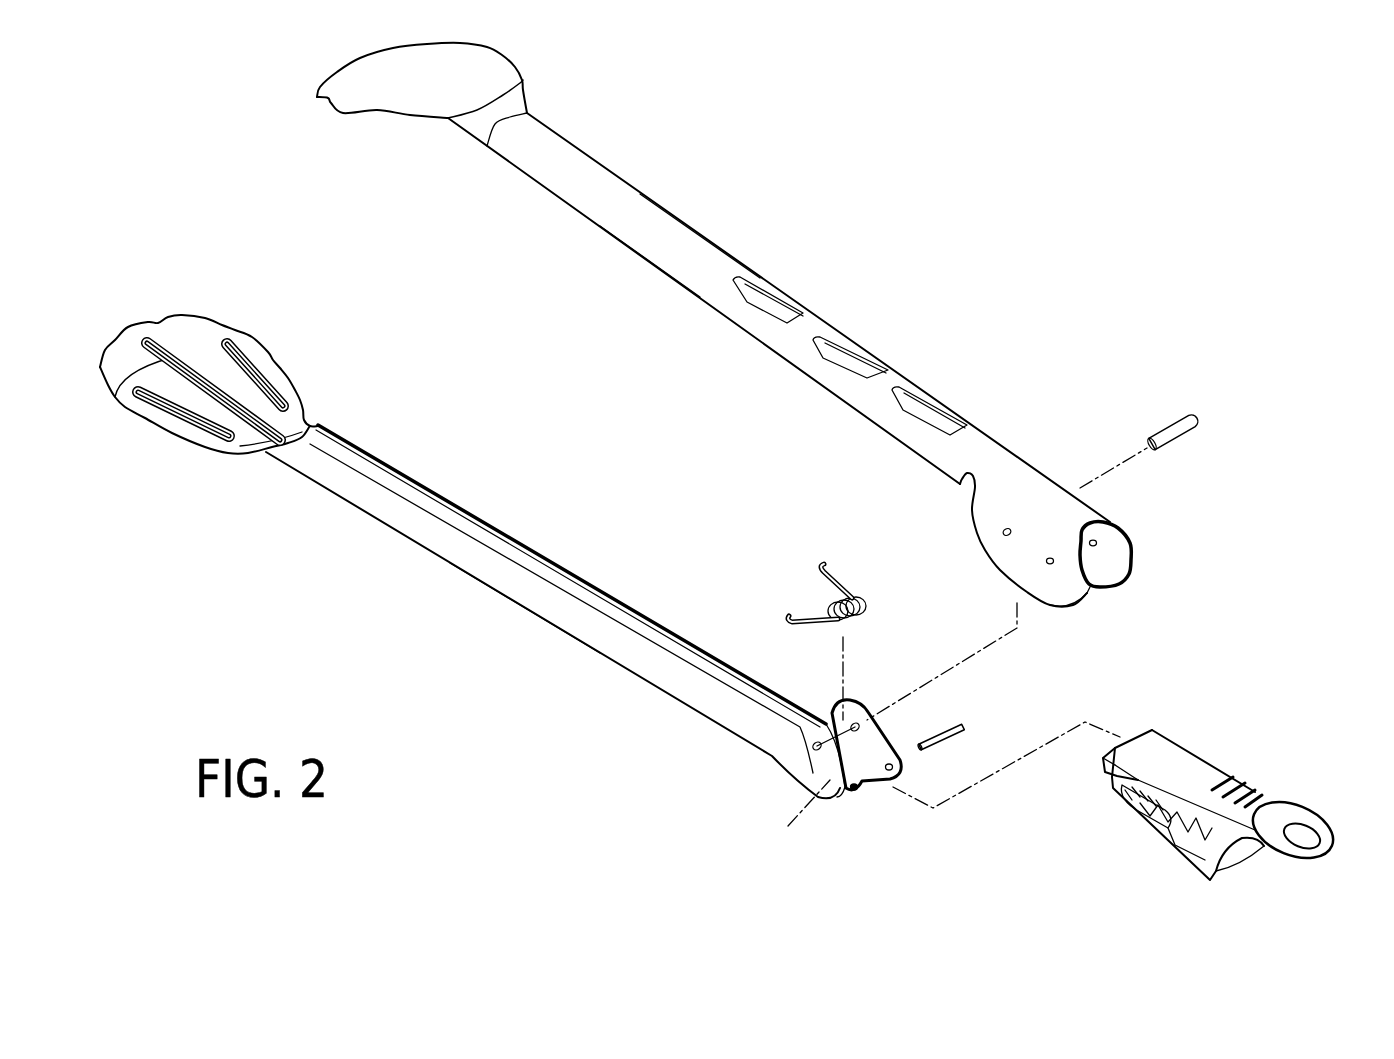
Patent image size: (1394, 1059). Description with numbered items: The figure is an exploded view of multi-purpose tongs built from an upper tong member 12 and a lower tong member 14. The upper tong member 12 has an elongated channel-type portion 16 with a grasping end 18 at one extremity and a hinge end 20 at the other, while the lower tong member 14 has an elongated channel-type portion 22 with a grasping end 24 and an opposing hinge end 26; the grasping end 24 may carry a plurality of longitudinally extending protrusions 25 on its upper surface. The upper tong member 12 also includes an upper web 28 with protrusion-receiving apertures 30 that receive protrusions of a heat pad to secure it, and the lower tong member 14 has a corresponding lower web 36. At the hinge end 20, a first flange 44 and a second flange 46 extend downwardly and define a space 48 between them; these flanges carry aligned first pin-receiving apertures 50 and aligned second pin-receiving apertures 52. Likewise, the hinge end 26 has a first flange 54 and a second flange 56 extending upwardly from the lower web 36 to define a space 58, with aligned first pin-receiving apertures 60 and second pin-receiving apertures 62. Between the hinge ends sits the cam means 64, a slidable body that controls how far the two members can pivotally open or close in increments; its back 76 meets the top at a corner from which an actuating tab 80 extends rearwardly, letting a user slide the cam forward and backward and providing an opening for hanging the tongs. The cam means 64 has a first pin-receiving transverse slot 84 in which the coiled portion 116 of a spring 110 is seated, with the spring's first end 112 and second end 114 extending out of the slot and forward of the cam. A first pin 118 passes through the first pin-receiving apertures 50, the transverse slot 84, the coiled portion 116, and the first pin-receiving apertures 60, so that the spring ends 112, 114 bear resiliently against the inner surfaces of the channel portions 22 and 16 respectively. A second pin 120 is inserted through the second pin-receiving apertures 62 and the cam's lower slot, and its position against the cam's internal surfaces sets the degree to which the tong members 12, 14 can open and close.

The upper tong member 12 is at (662, 196).
The lower tong member 14 is at (388, 530).
The elongated channel-type portion 16 is at (640, 262).
The grasping end 18 is at (500, 65).
The hinge end 20 is at (1140, 540).
The elongated channel-type portion 22 is at (587, 583).
The grasping end 24 is at (205, 355).
The longitudinally extending protrusions 25 is at (167, 410).
The hinge end 26 is at (800, 787).
The upper web 28 is at (712, 256).
The protrusion-receiving apertures 30 is at (790, 306).
The lower web 36 is at (590, 650).
The first flange 44 is at (1133, 568).
The second flange 46 is at (1075, 597).
The space 48 is at (1102, 594).
The first pin-receiving apertures 50 is at (1000, 530).
The second pin-receiving apertures 52 is at (1096, 542).
The first flange 54 is at (852, 792).
The second flange 56 is at (875, 730).
The space 58 is at (880, 772).
The first pin-receiving apertures 60 is at (857, 724).
The second pin-receiving apertures 62 is at (895, 770).
The cam means 64 is at (1236, 783).
The back 76 is at (1240, 858).
The actuating tab 80 is at (1335, 820).
The first pin-receiving transverse slot 84 is at (1177, 745).
The spring 110 is at (832, 557).
The first end 112 is at (786, 620).
The second end 114 is at (822, 566).
The coiled portion 116 is at (868, 615).
The first pin 118 is at (1173, 427).
The second pin 120 is at (962, 735).